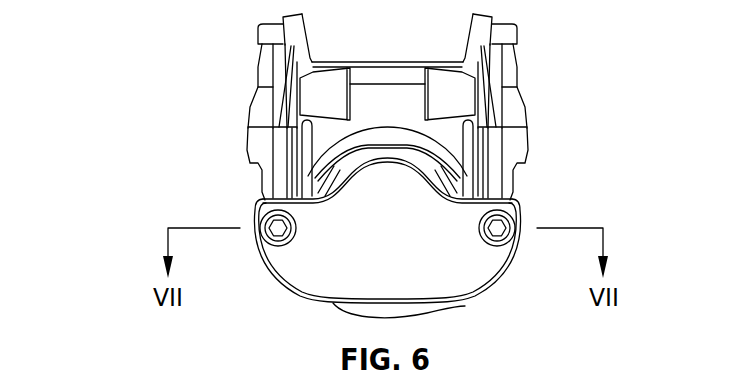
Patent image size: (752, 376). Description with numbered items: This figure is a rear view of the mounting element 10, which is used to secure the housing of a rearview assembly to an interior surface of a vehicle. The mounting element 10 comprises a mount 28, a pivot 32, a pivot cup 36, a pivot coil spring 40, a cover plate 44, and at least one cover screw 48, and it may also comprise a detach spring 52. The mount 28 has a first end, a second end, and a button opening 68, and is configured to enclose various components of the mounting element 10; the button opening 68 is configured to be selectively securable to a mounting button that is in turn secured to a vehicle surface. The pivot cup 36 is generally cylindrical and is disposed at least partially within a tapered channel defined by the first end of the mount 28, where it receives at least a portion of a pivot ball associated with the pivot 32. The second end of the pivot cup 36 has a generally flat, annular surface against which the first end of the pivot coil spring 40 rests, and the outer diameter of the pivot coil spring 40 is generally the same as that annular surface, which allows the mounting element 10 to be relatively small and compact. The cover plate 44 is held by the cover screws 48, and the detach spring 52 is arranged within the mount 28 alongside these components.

The mounting element 10 is at (172, 60).
The mount 28 is at (503, 16).
The button opening 68 is at (410, 110).
The detach spring 52 is at (455, 153).
The pivot cup 36 is at (502, 187).
The pivot coil spring 40 is at (336, 192).
The cover plate 44 is at (280, 283).
The pivot 32 is at (465, 306).
The cover screw 48 is at (260, 212).